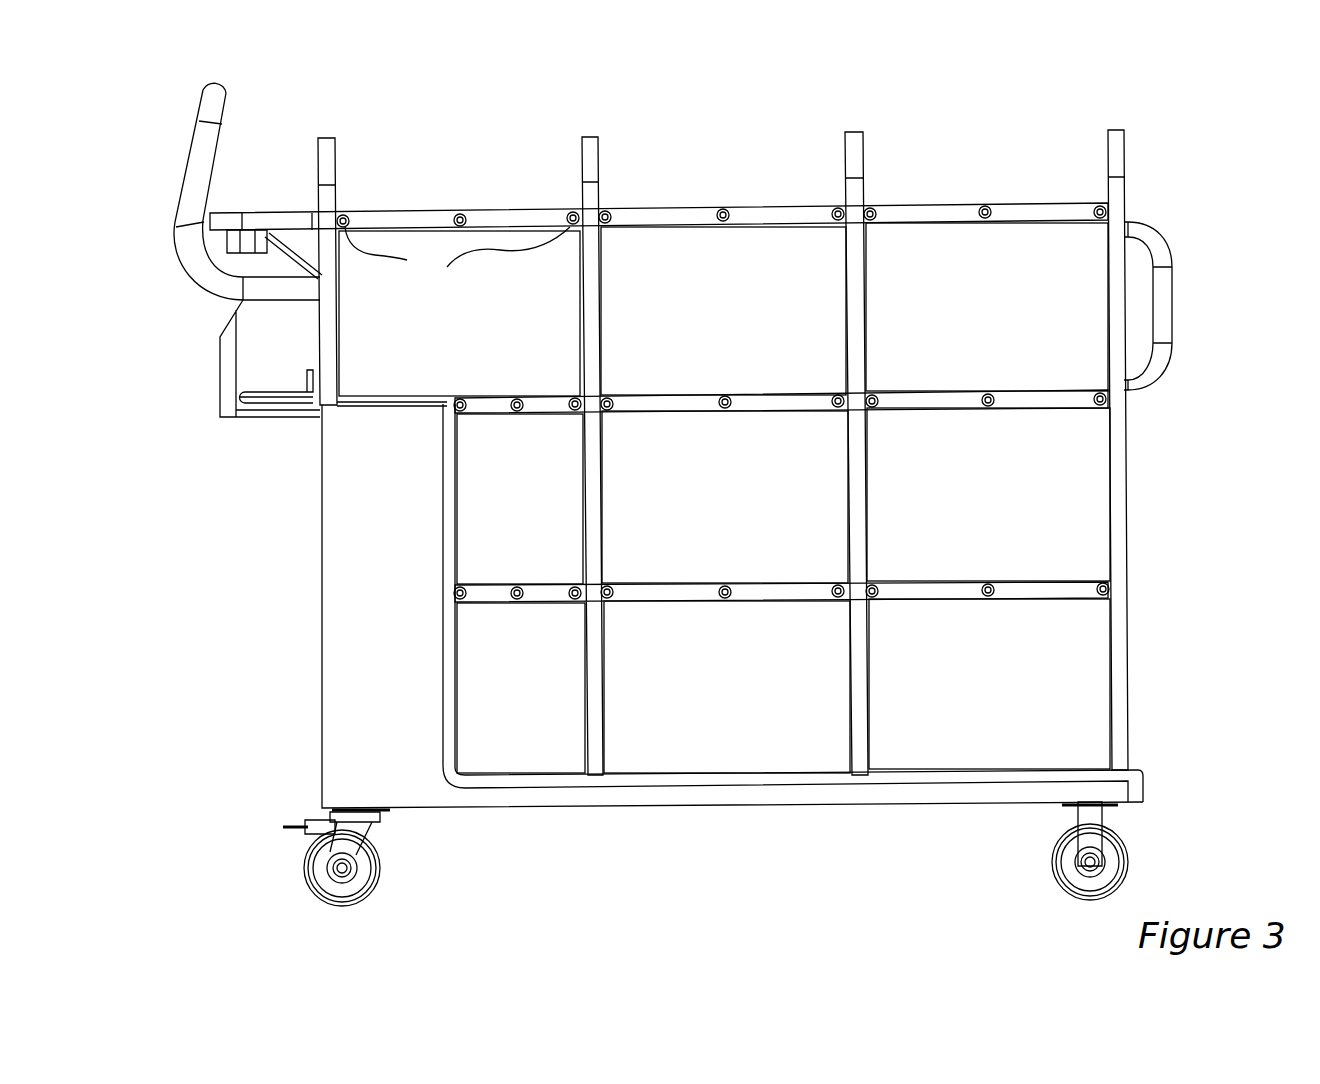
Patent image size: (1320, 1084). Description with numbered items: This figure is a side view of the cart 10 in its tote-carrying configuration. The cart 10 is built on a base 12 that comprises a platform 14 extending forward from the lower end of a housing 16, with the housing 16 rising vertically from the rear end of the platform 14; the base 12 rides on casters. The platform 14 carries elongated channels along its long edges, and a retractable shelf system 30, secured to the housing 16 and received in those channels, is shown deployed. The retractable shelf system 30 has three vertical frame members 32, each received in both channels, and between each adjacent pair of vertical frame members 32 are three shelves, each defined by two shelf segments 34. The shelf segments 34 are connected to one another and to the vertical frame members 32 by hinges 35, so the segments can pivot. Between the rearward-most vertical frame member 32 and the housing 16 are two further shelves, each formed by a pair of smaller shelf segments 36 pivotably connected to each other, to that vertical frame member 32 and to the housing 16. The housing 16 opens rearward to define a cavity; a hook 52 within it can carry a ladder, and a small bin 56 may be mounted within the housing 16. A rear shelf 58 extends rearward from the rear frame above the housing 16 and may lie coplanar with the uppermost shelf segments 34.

The cart 10 is at (1185, 103).
The base 12 is at (330, 578).
The platform 14 is at (757, 800).
The housing 16 is at (353, 638).
The retractable shelf system 30 is at (1125, 207).
The vertical frame members 32 is at (607, 498).
The shelf segments 34 is at (487, 207).
The hinges 35 is at (457, 260).
The smaller shelf segments 36 is at (538, 403).
The hook 52 is at (272, 397).
The bin 56 is at (222, 365).
The rear shelf 58 is at (253, 212).